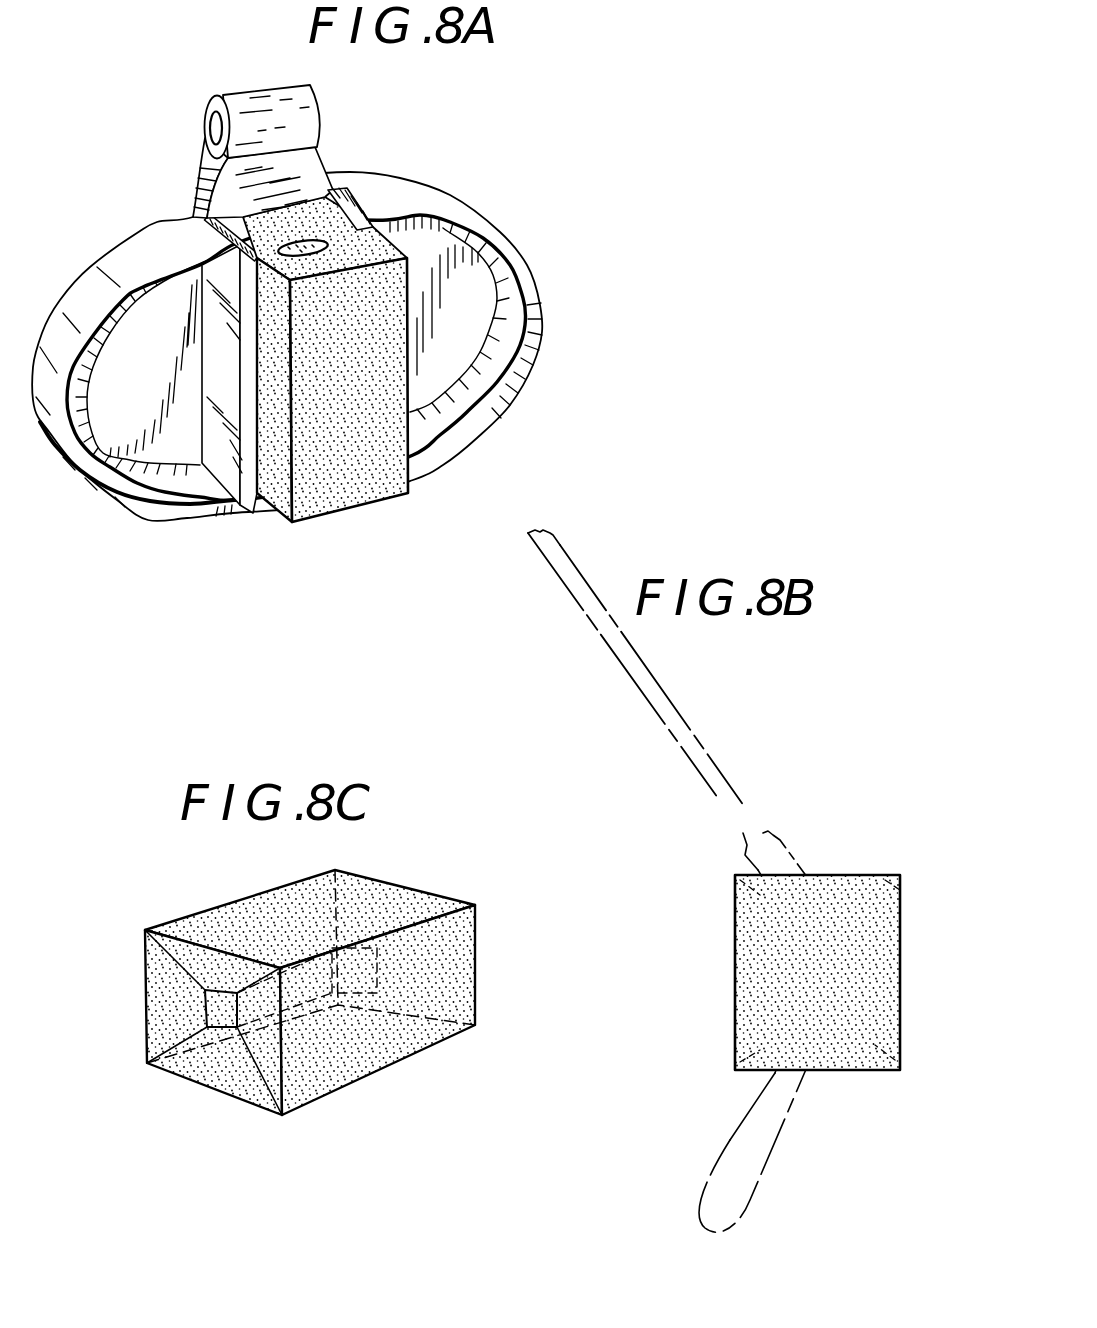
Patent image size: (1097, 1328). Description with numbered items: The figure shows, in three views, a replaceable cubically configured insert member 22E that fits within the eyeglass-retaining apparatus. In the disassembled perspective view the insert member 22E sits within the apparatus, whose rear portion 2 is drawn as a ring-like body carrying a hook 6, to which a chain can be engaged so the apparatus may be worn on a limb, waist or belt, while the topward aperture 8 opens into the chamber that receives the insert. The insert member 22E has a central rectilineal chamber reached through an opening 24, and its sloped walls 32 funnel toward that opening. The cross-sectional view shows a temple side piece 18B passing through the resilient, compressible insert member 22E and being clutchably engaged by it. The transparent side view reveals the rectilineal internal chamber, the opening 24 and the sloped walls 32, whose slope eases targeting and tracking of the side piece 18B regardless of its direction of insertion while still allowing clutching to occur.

In FIG. 8A, the rear portion 2 is at (425, 202).
In FIG. 8A, the hook 6 is at (318, 127).
In FIG. 8A, the aperture 8 is at (303, 190).
In FIG. 8A, the insert member 22E is at (400, 488).
In FIG. 8B, the insert member 22E is at (873, 897).
In FIG. 8C, the insert member 22E is at (463, 972).
In FIG. 8A, the opening 24 is at (253, 490).
In FIG. 8C, the opening 24 is at (222, 1027).
In FIG. 8B, the side piece 18B is at (647, 663).
In FIG. 8C, the sloped walls 32 is at (162, 1066).